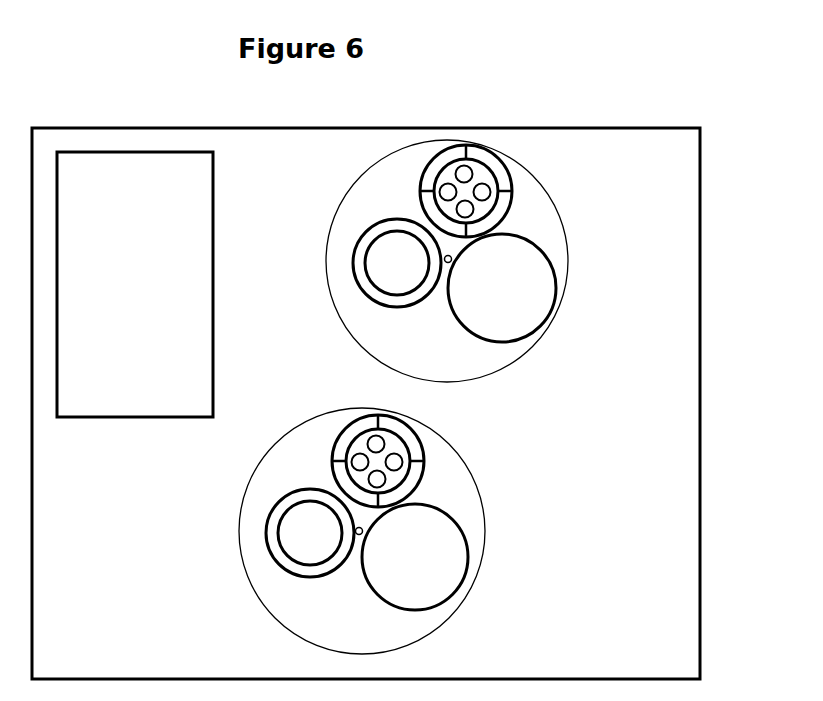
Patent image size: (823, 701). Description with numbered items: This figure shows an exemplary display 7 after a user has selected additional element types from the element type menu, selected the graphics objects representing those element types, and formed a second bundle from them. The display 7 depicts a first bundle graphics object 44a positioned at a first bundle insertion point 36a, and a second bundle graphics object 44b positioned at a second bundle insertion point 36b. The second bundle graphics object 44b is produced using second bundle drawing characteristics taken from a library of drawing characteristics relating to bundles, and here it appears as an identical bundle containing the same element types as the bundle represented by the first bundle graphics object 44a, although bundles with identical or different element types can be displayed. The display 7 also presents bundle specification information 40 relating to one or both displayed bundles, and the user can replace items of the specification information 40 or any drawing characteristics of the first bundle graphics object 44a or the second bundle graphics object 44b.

The display 7 is at (699, 164).
The bundle specification information 40 is at (213, 210).
The first bundle graphics object 44a is at (568, 262).
The second bundle graphics object 44b is at (484, 530).
The first bundle insertion point 36a is at (445, 262).
The second bundle insertion point 36b is at (356, 534).